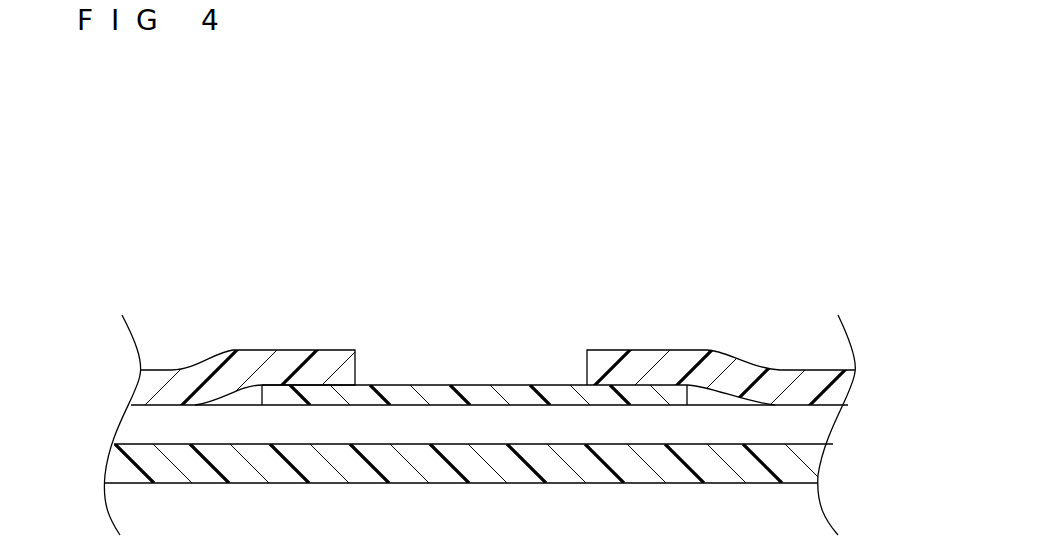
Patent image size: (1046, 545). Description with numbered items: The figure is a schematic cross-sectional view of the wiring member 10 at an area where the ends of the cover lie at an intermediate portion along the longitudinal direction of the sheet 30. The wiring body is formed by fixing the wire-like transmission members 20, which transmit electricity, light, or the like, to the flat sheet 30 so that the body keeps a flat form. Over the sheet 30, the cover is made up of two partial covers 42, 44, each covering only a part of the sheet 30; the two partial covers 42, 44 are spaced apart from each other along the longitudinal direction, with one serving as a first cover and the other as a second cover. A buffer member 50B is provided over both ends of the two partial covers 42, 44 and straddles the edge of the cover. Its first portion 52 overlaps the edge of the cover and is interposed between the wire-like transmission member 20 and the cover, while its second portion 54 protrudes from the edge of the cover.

The wiring member 10 is at (172, 201).
The wire-like transmission member 20 is at (493, 433).
The sheet 30 is at (412, 467).
The partial cover 42 is at (320, 350).
The partial cover 44 is at (622, 350).
The second surface of insulating film 50B is at (483, 385).
The first portion 52 is at (283, 383).
The second portion 54 is at (398, 385).